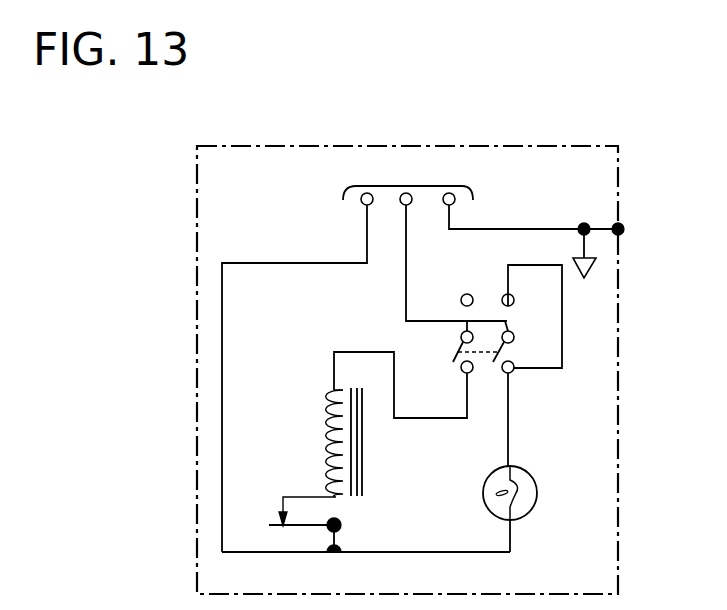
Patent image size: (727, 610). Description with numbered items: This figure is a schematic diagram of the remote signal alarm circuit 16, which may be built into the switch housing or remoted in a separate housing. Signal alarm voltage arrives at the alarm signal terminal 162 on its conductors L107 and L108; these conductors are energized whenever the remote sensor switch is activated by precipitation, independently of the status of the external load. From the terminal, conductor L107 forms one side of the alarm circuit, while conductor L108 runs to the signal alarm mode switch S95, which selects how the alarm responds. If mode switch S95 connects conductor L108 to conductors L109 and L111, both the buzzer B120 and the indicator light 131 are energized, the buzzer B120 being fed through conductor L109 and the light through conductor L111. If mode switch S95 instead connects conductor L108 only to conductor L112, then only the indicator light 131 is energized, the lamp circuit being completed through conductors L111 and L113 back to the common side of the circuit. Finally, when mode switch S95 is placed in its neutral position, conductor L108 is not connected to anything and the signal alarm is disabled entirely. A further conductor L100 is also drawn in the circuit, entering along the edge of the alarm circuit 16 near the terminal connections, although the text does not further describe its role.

The alarm circuit 16 is at (637, 168).
The alarm signal terminal 162 is at (347, 186).
The conductor L107 is at (300, 263).
The conductor L108 is at (406, 314).
The power lead line L100 is at (562, 229).
The conductor L112 is at (562, 339).
The signal alarm mode switch S95 is at (488, 302).
The lead line L109 is at (464, 419).
The buzzer B120 is at (328, 448).
The conductor L111 is at (512, 448).
The indicator light 131 is at (523, 517).
The conductor L113 is at (445, 552).